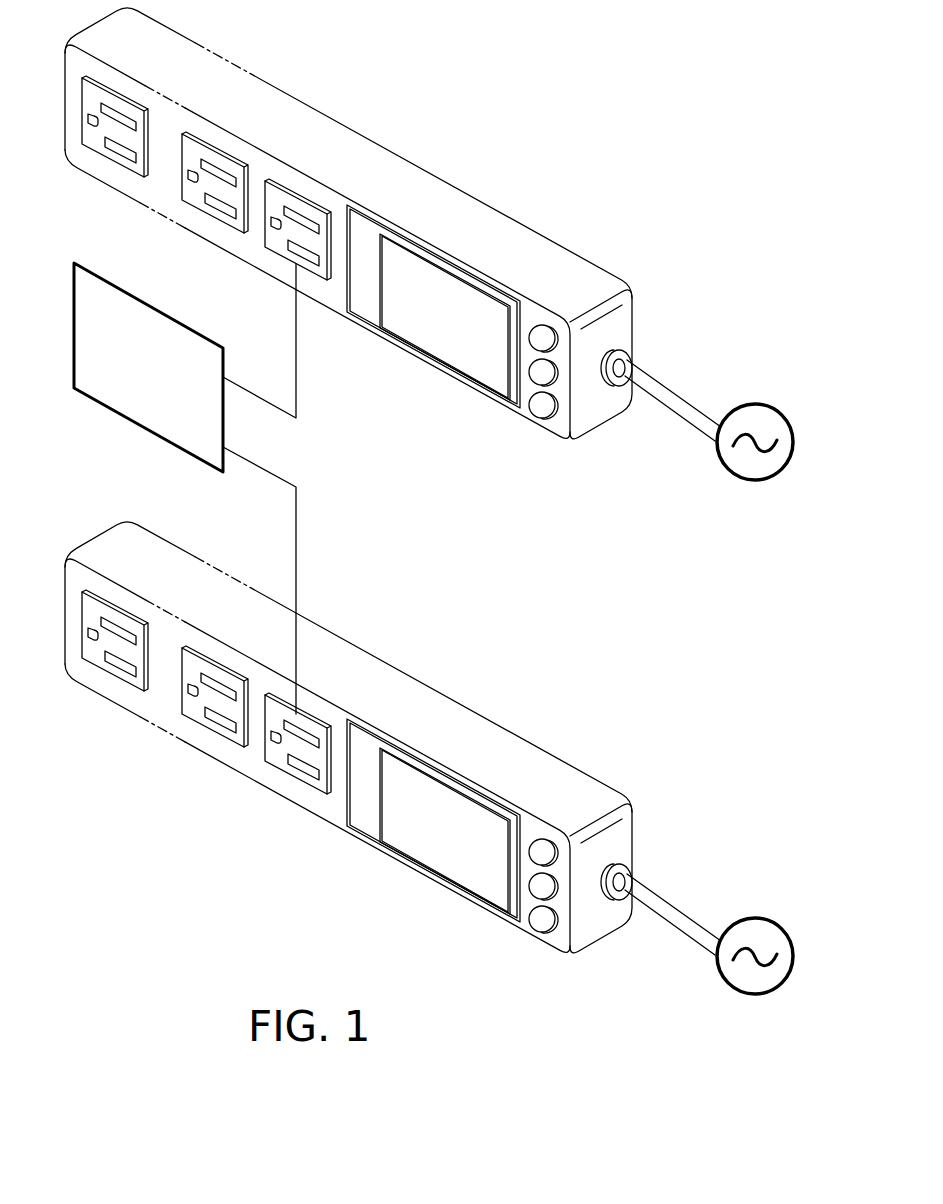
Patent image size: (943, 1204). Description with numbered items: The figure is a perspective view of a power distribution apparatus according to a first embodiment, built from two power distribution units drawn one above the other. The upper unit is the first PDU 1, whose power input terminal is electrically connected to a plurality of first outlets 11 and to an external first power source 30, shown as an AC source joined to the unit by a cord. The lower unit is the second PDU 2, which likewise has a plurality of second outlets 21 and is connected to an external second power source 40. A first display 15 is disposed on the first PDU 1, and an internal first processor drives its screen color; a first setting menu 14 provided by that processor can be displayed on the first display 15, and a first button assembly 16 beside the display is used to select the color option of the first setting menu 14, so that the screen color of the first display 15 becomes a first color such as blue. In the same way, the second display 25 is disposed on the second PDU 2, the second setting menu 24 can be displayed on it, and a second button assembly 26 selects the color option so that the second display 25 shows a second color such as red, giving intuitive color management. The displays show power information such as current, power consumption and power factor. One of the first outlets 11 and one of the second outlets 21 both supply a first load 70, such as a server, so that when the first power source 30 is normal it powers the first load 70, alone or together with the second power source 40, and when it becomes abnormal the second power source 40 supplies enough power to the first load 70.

The first PDU 1 is at (645, 321).
The second PDU 2 is at (378, 737).
The first outlets 11 is at (297, 199).
The first setting menu 14 is at (452, 287).
The first display 15 is at (417, 253).
The first button assembly 16 is at (538, 413).
The second outlets 21 is at (281, 765).
The second setting menu 24 is at (464, 808).
The second display 25 is at (433, 788).
The second button assembly 26 is at (524, 919).
The first power source 30 is at (735, 463).
The second power source 40 is at (697, 949).
The first load 70 is at (122, 402).